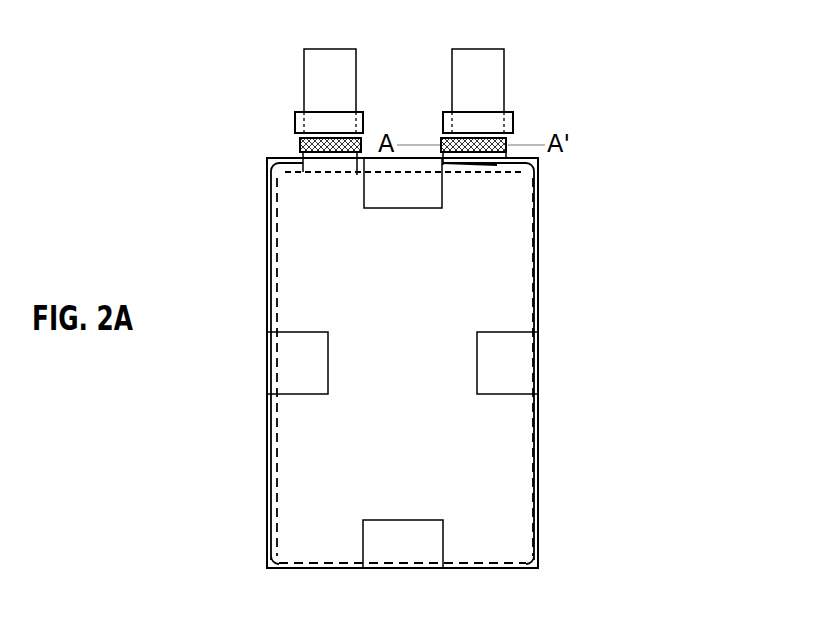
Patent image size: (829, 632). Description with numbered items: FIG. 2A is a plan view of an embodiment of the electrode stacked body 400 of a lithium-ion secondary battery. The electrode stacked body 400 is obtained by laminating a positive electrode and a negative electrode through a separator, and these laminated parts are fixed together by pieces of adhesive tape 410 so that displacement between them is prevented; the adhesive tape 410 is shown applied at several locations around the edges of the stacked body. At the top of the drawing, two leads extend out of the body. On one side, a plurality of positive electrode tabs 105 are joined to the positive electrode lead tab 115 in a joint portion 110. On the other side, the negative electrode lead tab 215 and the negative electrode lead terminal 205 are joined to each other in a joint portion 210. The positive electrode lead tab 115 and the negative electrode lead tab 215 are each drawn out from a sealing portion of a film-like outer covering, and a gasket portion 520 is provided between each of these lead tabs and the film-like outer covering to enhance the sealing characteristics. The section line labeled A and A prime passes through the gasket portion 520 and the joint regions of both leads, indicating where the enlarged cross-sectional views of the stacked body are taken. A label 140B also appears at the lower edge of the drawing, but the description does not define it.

The positive electrode tabs 105 is at (497, 165).
The joint portion 110 is at (515, 137).
The positive electrode lead tab 115 is at (478, 74).
The negative electrode lead terminal 205 is at (320, 162).
The joint portion 210 is at (299, 123).
The negative electrode lead tab 215 is at (317, 103).
The electrode stacked body 400 is at (567, 270).
The adhesive tape 410 is at (293, 363).
The gasket portion 520 is at (490, 122).
The cell body 140B is at (295, 626).